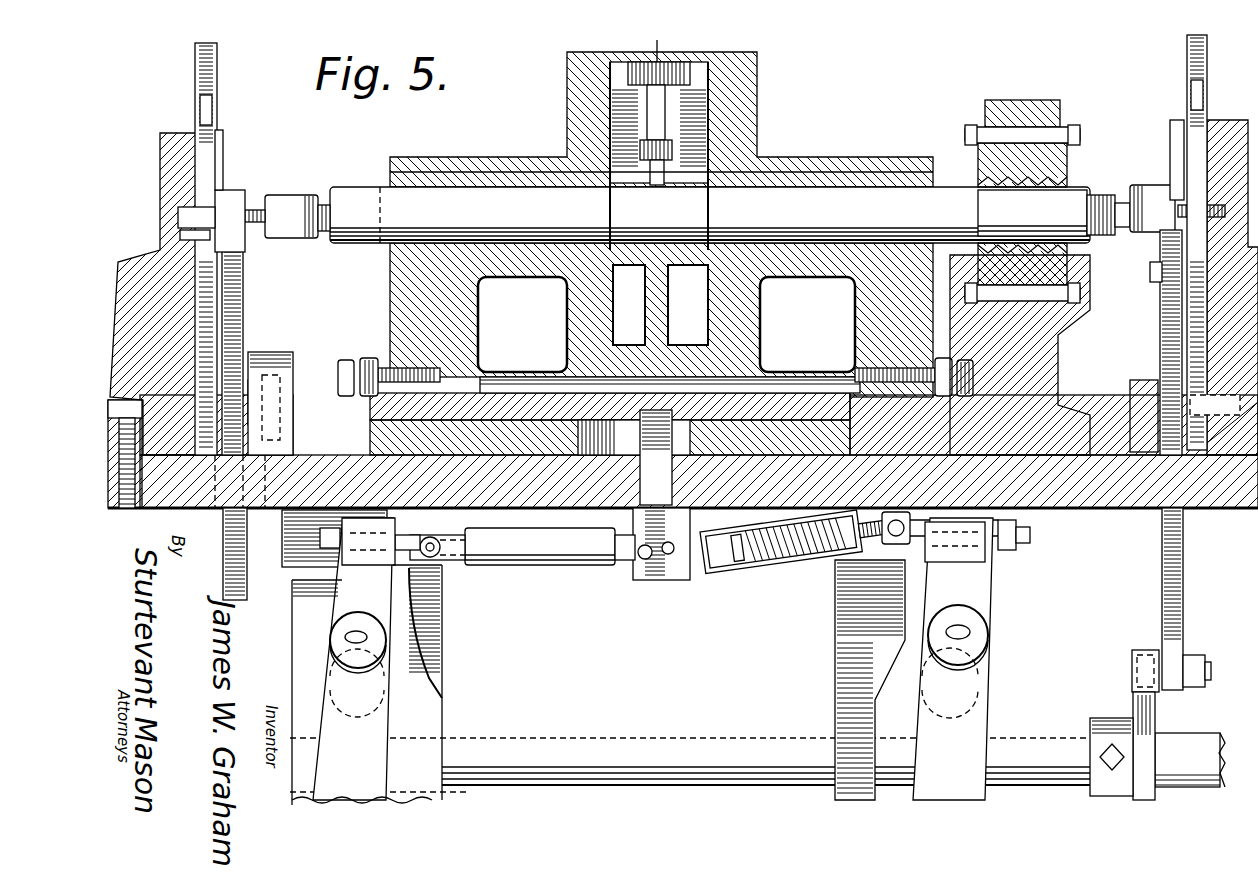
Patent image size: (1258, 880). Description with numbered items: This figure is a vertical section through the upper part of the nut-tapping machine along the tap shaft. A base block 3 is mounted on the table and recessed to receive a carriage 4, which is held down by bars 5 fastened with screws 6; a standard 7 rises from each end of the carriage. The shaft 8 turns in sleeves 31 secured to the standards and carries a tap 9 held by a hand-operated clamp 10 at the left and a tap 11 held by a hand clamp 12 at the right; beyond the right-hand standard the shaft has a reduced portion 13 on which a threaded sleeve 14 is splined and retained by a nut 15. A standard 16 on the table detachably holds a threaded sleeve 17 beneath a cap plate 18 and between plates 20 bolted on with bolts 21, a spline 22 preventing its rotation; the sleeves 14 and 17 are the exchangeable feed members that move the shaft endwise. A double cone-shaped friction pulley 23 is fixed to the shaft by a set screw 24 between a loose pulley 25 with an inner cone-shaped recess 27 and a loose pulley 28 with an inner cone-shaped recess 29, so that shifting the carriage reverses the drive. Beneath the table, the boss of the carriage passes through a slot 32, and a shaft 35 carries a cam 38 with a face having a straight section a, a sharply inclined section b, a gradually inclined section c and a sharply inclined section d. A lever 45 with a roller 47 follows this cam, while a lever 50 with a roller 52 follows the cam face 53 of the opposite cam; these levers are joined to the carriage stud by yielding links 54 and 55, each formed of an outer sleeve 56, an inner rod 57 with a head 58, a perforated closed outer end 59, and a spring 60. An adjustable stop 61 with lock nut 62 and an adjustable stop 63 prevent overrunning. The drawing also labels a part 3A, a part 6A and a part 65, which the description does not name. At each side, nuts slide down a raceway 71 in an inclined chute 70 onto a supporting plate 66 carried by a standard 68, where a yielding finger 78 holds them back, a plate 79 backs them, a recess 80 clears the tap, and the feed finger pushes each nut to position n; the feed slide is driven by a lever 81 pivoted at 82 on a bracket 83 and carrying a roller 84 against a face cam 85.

The base block 3 is at (380, 438).
The bracket 3A is at (640, 540).
The carriage 4 is at (472, 405).
The bars 5 is at (661, 224).
The screws 6 is at (655, 612).
The adjusting screw 6A is at (907, 352).
The standard 7 is at (462, 308).
The shaft 8 is at (382, 200).
The tap 9 is at (255, 208).
The hand-operated clamp 10 is at (290, 200).
The tap 11 is at (1152, 208).
The hand clamp 12 is at (1177, 205).
The reduced portion 13 is at (1032, 213).
The threaded sleeve 14 is at (975, 197).
The nut 15 is at (1097, 238).
The standard 16 is at (1060, 333).
The threaded sleeve 17 is at (985, 152).
The cap plate 18 is at (1022, 104).
The plates 20 is at (1000, 110).
The bolts 21 is at (975, 128).
The spline 22 is at (1080, 292).
The double cone-shaped friction pulley 23 is at (700, 140).
The set screw 24 is at (690, 170).
The pulley 25 is at (745, 85).
The inner cone-shaped recess 27 is at (720, 365).
The pulley 28 is at (567, 92).
The inner cone-shaped recess 29 is at (567, 140).
The sleeves 31 is at (537, 165).
The slot 32 is at (725, 478).
The shaft 35 is at (655, 745).
The cam 38 is at (840, 752).
The lever 45 is at (985, 612).
The roller 47 is at (975, 700).
The lever 50 is at (340, 620).
The roller 52 is at (360, 715).
The cam face 53 is at (395, 725).
The link 54 is at (530, 568).
The link 55 is at (822, 573).
The outer sleeve 56 is at (815, 600).
The inner rod 57 is at (730, 575).
The head 58 is at (720, 560).
The closed outer end 59 is at (870, 522).
The spring 60 is at (782, 570).
The adjustable stop 61 is at (345, 363).
The lock nut 62 is at (372, 358).
The adjustable stop 63 is at (965, 362).
The block 65 is at (265, 352).
The supporting plate 66 is at (190, 234).
The standard 68 is at (170, 165).
The inclined chute 70 is at (216, 78).
The raceway 71 is at (213, 105).
The yielding finger 78 is at (218, 160).
The plate 79 is at (196, 137).
The recess 80 is at (180, 212).
The lever 81 is at (244, 297).
The pivot 82 is at (255, 412).
The bracket 83 is at (215, 375).
The roller 84 is at (1142, 652).
The face cam 85 is at (1158, 716).
The straight section a is at (840, 625).
The sharply inclined section b is at (840, 668).
The gradually inclined section c is at (350, 608).
The sharply inclined section d is at (445, 636).
The tapping position n is at (200, 222).